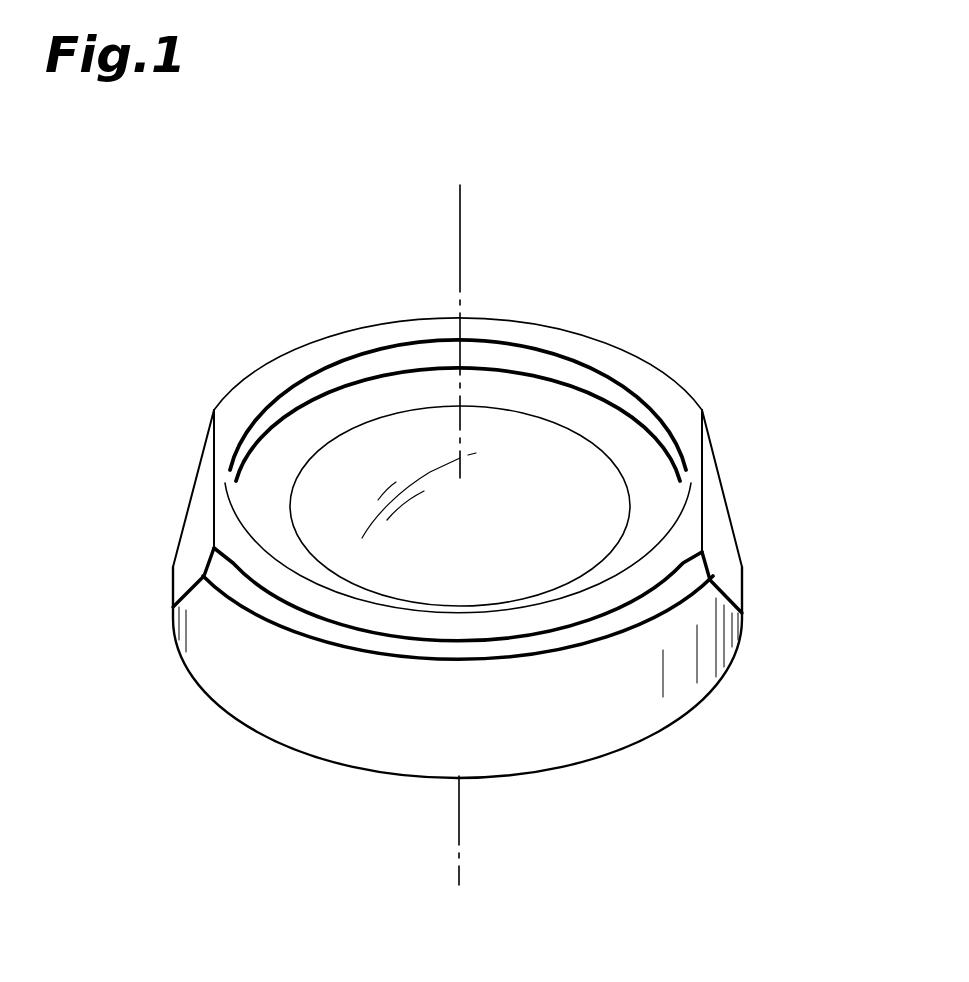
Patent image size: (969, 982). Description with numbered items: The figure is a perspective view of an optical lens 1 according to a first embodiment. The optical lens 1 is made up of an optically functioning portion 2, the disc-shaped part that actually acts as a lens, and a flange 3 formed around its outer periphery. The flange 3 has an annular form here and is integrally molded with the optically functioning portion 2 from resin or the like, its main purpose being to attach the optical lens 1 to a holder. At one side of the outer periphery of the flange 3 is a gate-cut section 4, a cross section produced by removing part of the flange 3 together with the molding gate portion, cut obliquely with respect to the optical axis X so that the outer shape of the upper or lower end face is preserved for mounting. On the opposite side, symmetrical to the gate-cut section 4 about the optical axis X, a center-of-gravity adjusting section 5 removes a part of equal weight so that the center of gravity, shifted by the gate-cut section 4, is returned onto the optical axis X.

The optical lens 1 is at (474, 478).
The optically functioning portion 2 is at (500, 440).
The flange 3 is at (335, 350).
The gate-cut section 4 is at (718, 543).
The center-of-gravity adjusting section 5 is at (200, 540).
The optical axis X is at (462, 233).